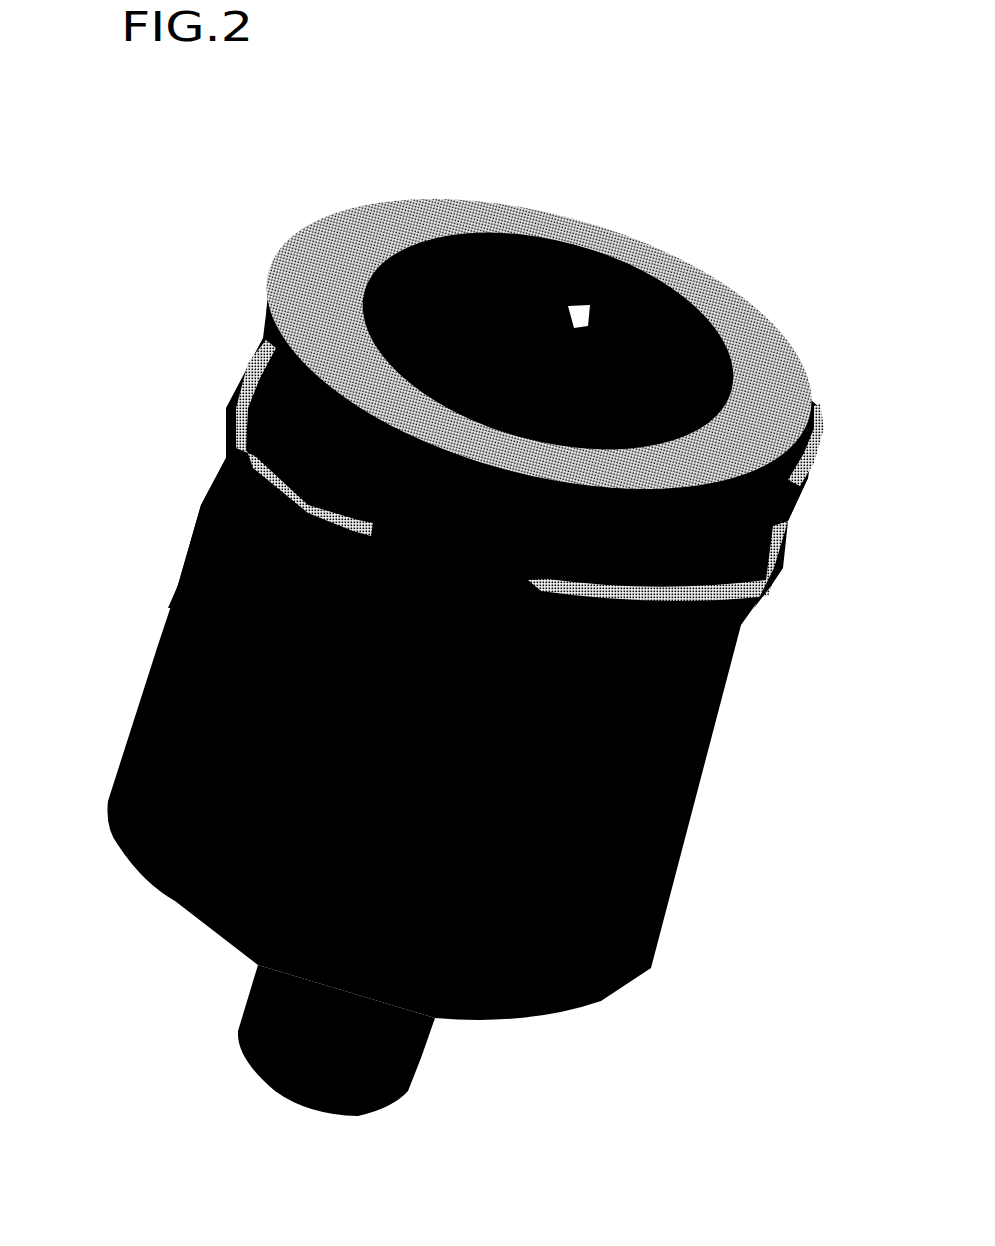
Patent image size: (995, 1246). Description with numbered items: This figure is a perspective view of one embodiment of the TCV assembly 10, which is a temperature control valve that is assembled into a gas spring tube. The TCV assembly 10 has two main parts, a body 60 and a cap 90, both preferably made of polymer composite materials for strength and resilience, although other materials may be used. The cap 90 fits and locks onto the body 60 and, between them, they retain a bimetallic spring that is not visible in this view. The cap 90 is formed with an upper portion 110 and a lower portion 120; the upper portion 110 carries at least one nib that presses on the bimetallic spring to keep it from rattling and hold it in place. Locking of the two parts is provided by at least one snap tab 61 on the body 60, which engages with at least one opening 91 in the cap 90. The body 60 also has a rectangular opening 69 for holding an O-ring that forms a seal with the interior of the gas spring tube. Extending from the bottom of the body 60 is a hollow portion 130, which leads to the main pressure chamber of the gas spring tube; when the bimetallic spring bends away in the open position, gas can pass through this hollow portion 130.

The TCV assembly 10 is at (464, 606).
The body 60 is at (663, 908).
The snap tab 61 is at (217, 417).
The rectangular opening 69 is at (187, 518).
The cap 90 is at (783, 510).
The opening 91 is at (757, 597).
The upper portion 110 is at (797, 367).
The lower portion 120 is at (763, 573).
The hollow portion 130 is at (410, 1063).